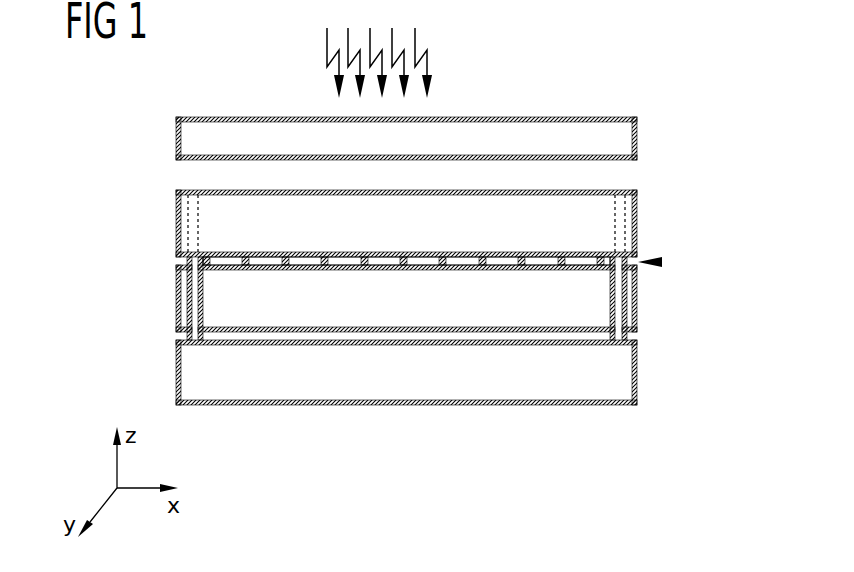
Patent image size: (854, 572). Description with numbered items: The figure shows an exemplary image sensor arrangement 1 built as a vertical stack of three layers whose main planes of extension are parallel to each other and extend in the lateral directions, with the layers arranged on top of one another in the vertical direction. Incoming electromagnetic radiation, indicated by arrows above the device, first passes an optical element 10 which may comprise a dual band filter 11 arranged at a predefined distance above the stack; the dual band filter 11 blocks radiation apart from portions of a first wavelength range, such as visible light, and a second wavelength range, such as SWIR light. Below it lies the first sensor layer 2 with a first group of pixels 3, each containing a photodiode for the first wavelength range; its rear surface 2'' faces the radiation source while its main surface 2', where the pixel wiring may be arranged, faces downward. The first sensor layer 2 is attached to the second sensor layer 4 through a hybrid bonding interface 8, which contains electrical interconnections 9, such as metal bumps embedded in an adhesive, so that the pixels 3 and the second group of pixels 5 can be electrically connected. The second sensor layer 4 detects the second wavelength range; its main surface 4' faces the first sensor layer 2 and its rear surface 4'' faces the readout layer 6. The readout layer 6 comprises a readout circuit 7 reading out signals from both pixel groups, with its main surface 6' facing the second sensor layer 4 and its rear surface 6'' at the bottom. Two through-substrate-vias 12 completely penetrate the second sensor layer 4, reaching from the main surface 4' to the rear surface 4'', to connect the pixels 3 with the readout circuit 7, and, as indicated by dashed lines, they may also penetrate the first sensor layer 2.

The image sensor arrangement 1 is at (693, 78).
The first sensor layer 2 is at (382, 223).
The main surface of the first sensor layer 2' is at (406, 228).
The rear surface of the first sensor layer 2'' is at (406, 221).
The pixels of the first group 3 is at (185, 242).
The second sensor layer 4 is at (405, 298).
The main surface of the second sensor layer 4' is at (406, 295).
The rear surface of the second sensor layer 4'' is at (406, 302).
The pixels of the second group 5 is at (183, 318).
The readout layer 6 is at (382, 371).
The main surface of the readout layer 6' is at (406, 371).
The rear surface of the readout layer 6'' is at (406, 376).
The readout circuit 7 is at (382, 372).
The hybrid bonding interface 8 is at (662, 262).
The electrical interconnections 9 is at (598, 252).
The optical element 10 is at (453, 138).
The dual band filter 11 is at (628, 140).
The through-substrate-vias 12 is at (620, 298).